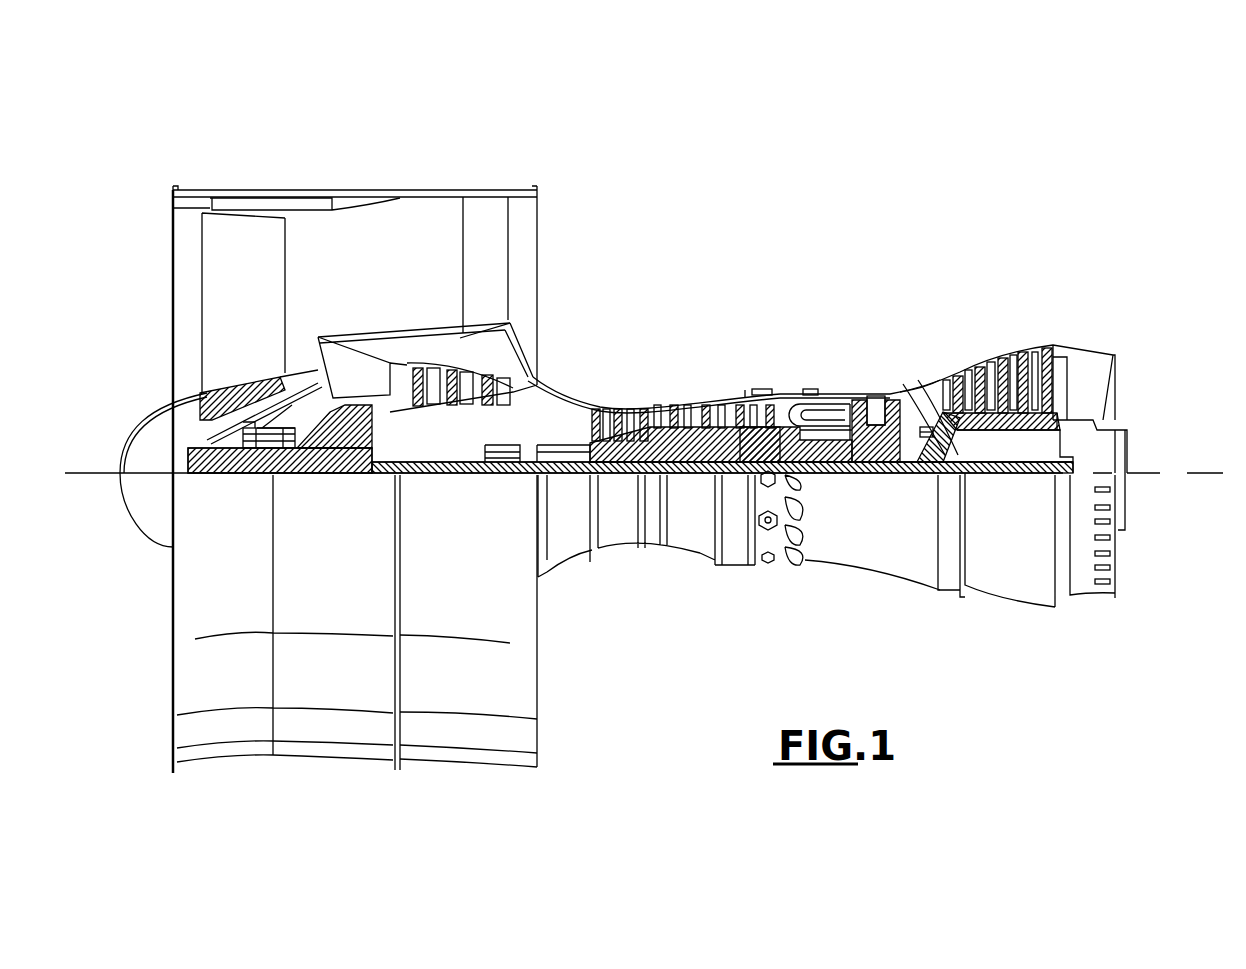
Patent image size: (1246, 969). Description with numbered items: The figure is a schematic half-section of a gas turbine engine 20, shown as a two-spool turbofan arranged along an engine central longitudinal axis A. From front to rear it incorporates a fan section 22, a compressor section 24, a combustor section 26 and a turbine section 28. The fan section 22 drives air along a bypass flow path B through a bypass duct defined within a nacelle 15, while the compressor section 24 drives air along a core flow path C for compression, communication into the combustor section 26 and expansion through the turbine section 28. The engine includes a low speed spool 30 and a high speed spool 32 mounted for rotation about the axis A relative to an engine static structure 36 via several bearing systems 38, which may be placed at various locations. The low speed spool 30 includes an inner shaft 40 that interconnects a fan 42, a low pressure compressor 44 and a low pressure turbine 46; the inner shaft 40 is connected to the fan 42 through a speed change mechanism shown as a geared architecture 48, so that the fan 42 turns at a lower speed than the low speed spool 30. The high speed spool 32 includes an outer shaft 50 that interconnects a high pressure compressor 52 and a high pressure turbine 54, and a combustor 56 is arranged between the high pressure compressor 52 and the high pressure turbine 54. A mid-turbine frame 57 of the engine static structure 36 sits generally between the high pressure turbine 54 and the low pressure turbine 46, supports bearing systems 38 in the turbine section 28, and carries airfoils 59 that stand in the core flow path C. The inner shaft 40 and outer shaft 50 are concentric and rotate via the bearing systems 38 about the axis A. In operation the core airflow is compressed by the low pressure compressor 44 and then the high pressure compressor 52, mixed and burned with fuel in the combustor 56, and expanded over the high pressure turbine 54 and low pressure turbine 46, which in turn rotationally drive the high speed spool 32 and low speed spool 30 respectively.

The nacelle 15 is at (355, 193).
The gas turbine engine 20 is at (817, 239).
The fan section 22 is at (283, 180).
The compressor section 24 is at (590, 376).
The combustor section 26 is at (807, 366).
The turbine section 28 is at (961, 328).
The low speed spool 30 is at (693, 486).
The high speed spool 32 is at (733, 433).
The engine static structure 36 is at (733, 570).
The bearing systems 38 is at (494, 450).
The inner shaft 40 is at (548, 478).
The fan 42 is at (257, 316).
The low pressure compressor 44 is at (458, 383).
The low pressure turbine 46 is at (1000, 370).
The geared architecture 48 is at (361, 457).
The outer shaft 50 is at (810, 455).
The high pressure compressor 52 is at (668, 445).
The high pressure turbine 54 is at (873, 395).
The combustor 56 is at (808, 417).
The mid-turbine frame 57 is at (921, 380).
The airfoils 59 is at (938, 440).
The engine central longitudinal axis A is at (1207, 473).
The bypass flow path B is at (315, 265).
The core flow path C is at (355, 368).